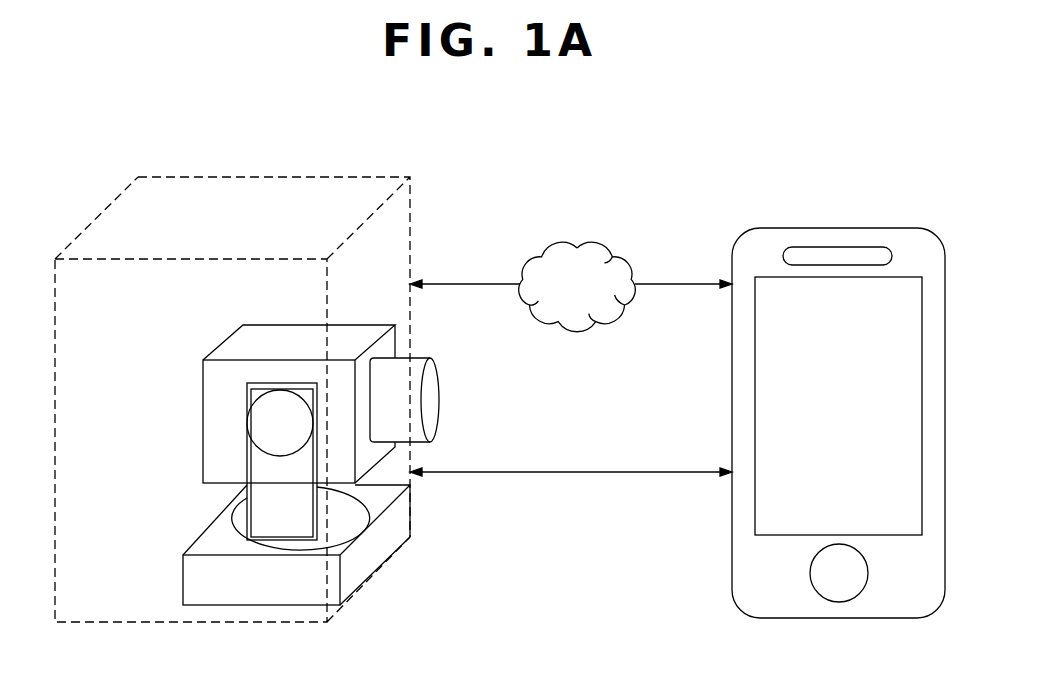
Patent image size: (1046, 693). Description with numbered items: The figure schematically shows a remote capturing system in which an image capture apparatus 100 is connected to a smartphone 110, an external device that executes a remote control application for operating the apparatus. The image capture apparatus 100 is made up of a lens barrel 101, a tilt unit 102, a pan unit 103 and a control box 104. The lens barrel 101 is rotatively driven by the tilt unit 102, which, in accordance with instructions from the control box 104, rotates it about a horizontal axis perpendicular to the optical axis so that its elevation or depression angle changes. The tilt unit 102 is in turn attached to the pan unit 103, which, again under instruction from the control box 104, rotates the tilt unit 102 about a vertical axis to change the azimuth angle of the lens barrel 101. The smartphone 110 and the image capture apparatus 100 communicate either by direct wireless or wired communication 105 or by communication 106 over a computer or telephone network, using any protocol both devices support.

The image capture apparatus 100 is at (321, 176).
The lens barrel 101 is at (287, 322).
The tilt unit 102 is at (258, 422).
The pan unit 103 is at (347, 510).
The control box 104 is at (183, 578).
The direct wireless or wired communication 105 is at (578, 470).
The communication over a network 106 is at (590, 245).
The smartphone 110 is at (868, 227).